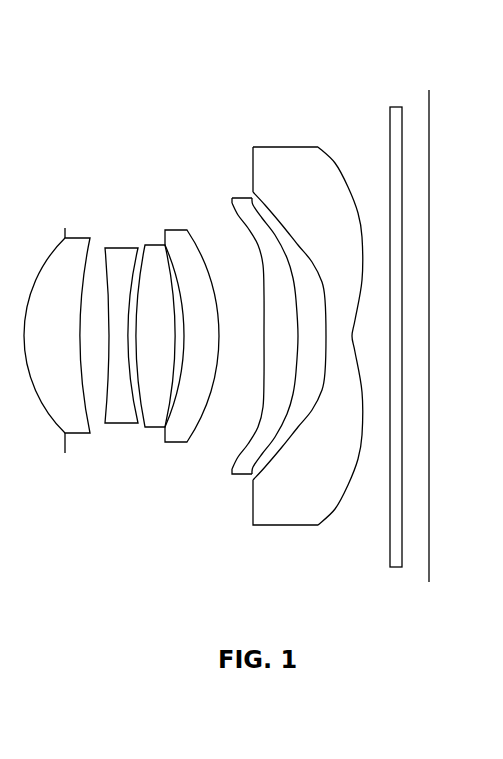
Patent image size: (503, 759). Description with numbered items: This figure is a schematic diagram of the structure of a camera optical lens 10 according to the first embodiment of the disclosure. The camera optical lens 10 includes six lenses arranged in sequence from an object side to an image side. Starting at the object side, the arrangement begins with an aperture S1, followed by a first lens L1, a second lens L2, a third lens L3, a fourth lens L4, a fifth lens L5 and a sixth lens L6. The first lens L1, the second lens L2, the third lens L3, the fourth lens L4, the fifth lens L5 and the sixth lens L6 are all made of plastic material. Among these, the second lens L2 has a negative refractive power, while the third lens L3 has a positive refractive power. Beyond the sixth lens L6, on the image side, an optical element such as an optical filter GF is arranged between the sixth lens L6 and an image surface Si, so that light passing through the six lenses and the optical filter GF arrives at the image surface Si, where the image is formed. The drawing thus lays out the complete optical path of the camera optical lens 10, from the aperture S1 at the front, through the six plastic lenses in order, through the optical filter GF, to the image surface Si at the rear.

The camera optical lens 10 is at (240, 40).
The aperture S1 is at (52, 331).
The first lens L1 is at (57, 322).
The second lens L2 is at (121, 324).
The third lens L3 is at (155, 325).
The fourth lens L4 is at (191, 323).
The fifth lens L5 is at (259, 323).
The sixth lens L6 is at (308, 325).
The optical filter GF is at (393, 323).
The image surface Si is at (428, 326).